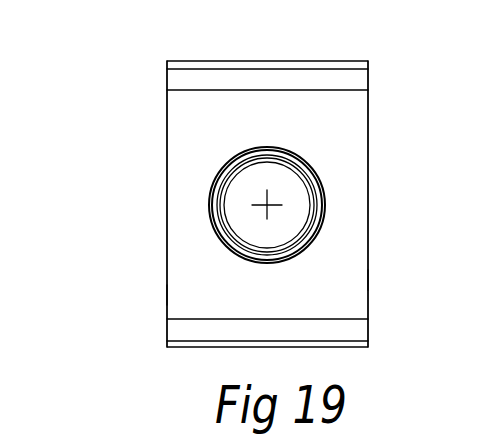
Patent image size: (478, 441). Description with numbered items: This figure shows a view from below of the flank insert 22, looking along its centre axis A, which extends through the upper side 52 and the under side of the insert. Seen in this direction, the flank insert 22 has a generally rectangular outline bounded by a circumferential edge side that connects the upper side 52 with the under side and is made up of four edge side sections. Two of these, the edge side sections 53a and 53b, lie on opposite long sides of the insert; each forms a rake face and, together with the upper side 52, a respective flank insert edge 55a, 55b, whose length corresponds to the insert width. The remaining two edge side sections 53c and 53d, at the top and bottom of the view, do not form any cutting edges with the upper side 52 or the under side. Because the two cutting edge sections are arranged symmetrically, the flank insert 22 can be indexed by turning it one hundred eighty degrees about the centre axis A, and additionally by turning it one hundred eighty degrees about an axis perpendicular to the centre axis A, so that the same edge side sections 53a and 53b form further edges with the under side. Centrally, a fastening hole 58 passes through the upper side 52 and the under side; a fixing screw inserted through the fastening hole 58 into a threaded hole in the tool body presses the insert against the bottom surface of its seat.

The flank insert 22 is at (145, 83).
The upper side 52 is at (334, 126).
The edge side section 53a is at (368, 183).
The edge side section 53b is at (167, 182).
The edge side section 53c is at (216, 347).
The edge side section 53d is at (270, 61).
The flank insert edge 55a is at (368, 280).
The flank insert edge 55b is at (167, 296).
The fastening hole 58 is at (248, 188).
The centre axis A is at (268, 203).